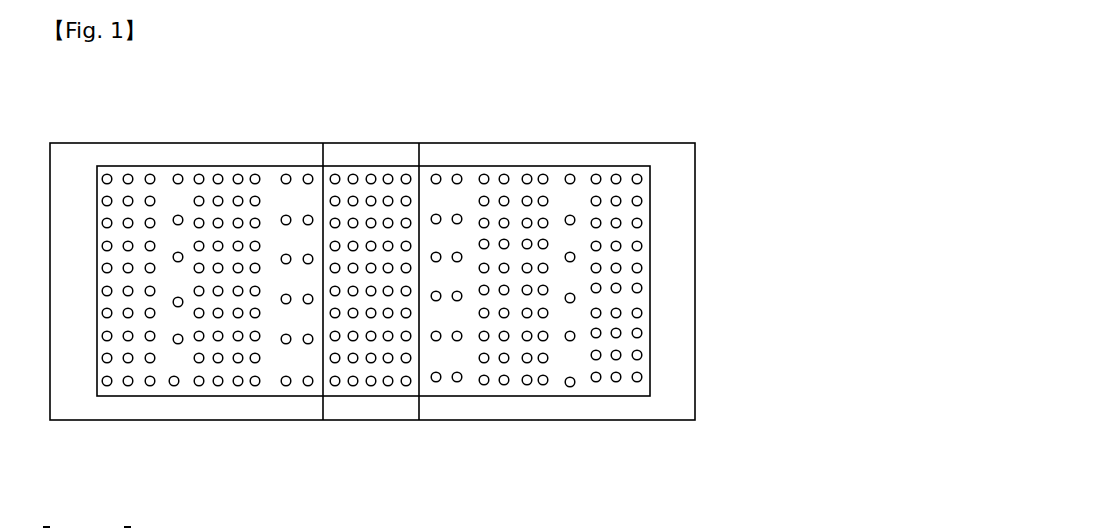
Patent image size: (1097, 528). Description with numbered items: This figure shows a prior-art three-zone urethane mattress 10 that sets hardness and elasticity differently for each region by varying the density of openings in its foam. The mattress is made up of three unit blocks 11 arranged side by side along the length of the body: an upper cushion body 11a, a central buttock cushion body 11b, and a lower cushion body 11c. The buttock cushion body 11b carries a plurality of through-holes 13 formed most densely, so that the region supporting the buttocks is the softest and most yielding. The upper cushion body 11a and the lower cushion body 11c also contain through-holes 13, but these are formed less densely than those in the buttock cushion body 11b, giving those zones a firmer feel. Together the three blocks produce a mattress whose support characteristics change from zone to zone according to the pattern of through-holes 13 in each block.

The probe card / substrate 10 is at (706, 286).
The probe array region 11 is at (483, 460).
The upper cushion body 11a is at (267, 386).
The buttock cushion body 11b is at (374, 382).
The lower cushion body 11c is at (468, 382).
The through-hole 13 is at (458, 177).